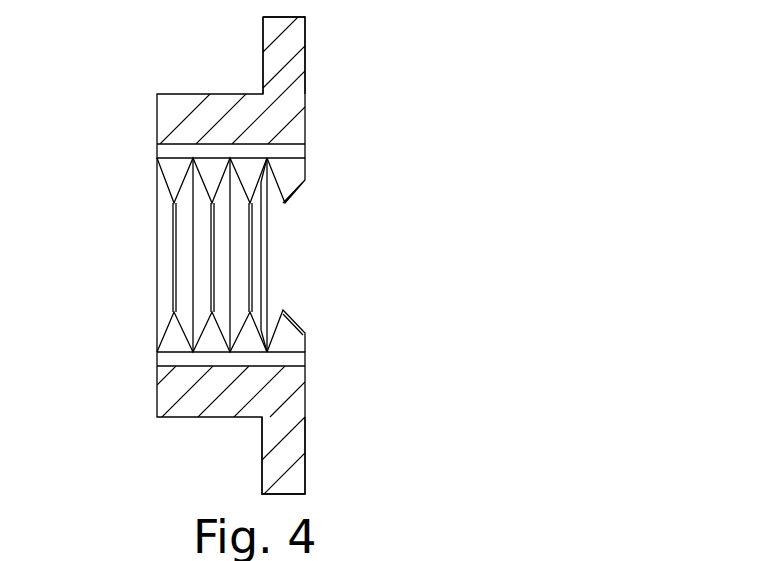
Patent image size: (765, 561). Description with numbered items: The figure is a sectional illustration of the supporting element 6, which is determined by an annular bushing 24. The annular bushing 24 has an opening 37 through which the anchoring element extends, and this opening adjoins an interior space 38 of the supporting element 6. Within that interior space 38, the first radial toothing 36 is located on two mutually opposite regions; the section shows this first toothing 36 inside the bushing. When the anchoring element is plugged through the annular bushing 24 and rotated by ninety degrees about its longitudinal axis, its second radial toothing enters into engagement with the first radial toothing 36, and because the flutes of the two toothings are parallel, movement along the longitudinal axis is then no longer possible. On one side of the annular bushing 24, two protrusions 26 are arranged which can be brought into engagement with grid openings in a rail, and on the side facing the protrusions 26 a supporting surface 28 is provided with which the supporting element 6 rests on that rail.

The supporting element 6 is at (326, 110).
The annular bushing 24 is at (165, 398).
The protrusions 26 is at (288, 32).
The supporting surface 28 is at (309, 393).
The first radial toothing 36 is at (262, 252).
The opening 37 is at (329, 280).
The interior space 38 is at (157, 244).